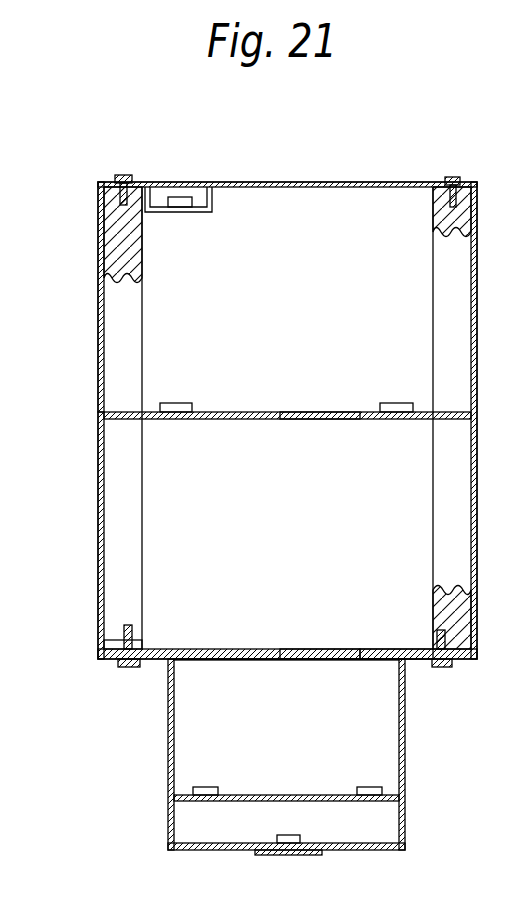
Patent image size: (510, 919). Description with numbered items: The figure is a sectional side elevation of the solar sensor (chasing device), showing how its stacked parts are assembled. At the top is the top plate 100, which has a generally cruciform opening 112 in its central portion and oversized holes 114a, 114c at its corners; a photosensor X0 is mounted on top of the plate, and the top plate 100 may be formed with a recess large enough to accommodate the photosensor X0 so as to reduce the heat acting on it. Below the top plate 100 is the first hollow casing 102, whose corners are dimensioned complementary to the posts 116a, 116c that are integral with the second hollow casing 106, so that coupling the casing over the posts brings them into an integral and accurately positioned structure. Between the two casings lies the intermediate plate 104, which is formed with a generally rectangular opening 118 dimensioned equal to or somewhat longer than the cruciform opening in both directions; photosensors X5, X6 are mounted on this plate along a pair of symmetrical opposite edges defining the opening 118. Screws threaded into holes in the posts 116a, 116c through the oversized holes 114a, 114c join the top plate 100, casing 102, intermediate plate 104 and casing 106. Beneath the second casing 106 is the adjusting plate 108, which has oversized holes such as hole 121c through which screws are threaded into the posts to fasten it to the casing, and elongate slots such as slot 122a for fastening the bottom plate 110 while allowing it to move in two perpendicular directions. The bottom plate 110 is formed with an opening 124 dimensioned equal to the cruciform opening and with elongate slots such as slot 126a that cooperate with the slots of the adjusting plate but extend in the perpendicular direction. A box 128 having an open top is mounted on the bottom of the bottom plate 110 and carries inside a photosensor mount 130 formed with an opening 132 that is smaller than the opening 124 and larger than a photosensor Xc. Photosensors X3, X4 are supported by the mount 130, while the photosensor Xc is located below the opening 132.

The top plate 100 is at (395, 182).
The first hollow casing 102 is at (98, 318).
The intermediate plate 104 is at (400, 419).
The second hollow casing 106 is at (98, 532).
The adjusting plate 108 is at (388, 649).
The bottom plate 110 is at (368, 660).
The cruciform opening 112 is at (287, 187).
The oversized hole 114a is at (118, 182).
The oversized hole 114c is at (450, 178).
The post 116a is at (142, 500).
The post 116c is at (433, 518).
The rectangular opening 118 is at (332, 419).
The oversized hole 121c is at (433, 645).
The elongate slot 122a is at (145, 649).
The opening 124 is at (306, 660).
The elongate slot 126a is at (122, 665).
The box 128 is at (405, 744).
The photosensor mount 130 is at (207, 801).
The opening 132 is at (288, 795).
The photosensor X0 is at (185, 208).
The photosensor X3 is at (205, 787).
The photosensor X4 is at (365, 787).
The photosensor X5 is at (178, 403).
The photosensor X6 is at (395, 403).
The photosensor Xc is at (293, 828).